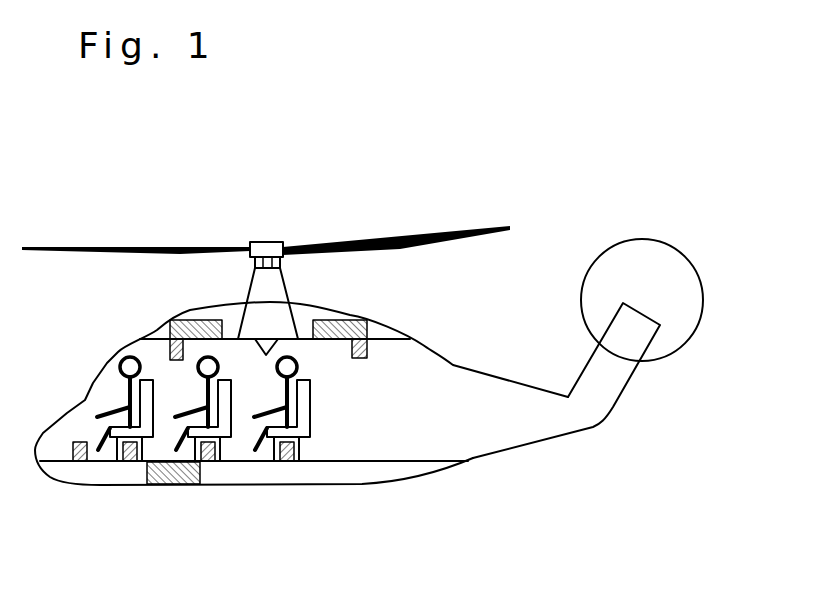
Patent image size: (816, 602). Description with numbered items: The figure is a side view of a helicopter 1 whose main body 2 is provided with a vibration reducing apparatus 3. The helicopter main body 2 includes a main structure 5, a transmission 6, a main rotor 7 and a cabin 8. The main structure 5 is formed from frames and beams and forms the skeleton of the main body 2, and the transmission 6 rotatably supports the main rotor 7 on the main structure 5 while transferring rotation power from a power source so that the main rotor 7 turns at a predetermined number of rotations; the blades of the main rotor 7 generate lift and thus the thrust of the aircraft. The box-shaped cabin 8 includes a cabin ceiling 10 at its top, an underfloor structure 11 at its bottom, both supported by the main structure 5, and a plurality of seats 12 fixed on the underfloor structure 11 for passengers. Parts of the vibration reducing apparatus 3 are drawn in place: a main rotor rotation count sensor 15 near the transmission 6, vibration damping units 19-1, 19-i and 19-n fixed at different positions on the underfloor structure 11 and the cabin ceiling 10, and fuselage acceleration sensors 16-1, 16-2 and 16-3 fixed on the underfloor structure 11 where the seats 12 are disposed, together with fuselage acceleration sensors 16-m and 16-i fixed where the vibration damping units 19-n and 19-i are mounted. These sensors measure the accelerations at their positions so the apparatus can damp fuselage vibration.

The helicopter 1 is at (562, 197).
The main body 2 is at (84, 398).
The vibration reducing apparatus 3 is at (78, 465).
The main structure 5 is at (487, 372).
The transmission 6 is at (250, 287).
The main rotor 7 is at (440, 230).
The cabin 8 is at (334, 410).
The cabin ceiling 10 is at (157, 336).
The underfloor structure 11 is at (67, 458).
The seat 12 is at (311, 450).
The main rotor rotation count sensor 15 is at (257, 343).
The fuselage acceleration sensor 16-1 is at (110, 486).
The fuselage acceleration sensor 16-2 is at (227, 486).
The fuselage acceleration sensor 16-3 is at (306, 486).
The fuselage acceleration sensor 16-m is at (168, 350).
The fuselage acceleration sensor 16-i is at (367, 348).
The vibration damping unit 19-1 is at (173, 486).
The vibration damping unit 19-n is at (187, 320).
The vibration damping unit 19-i is at (350, 320).